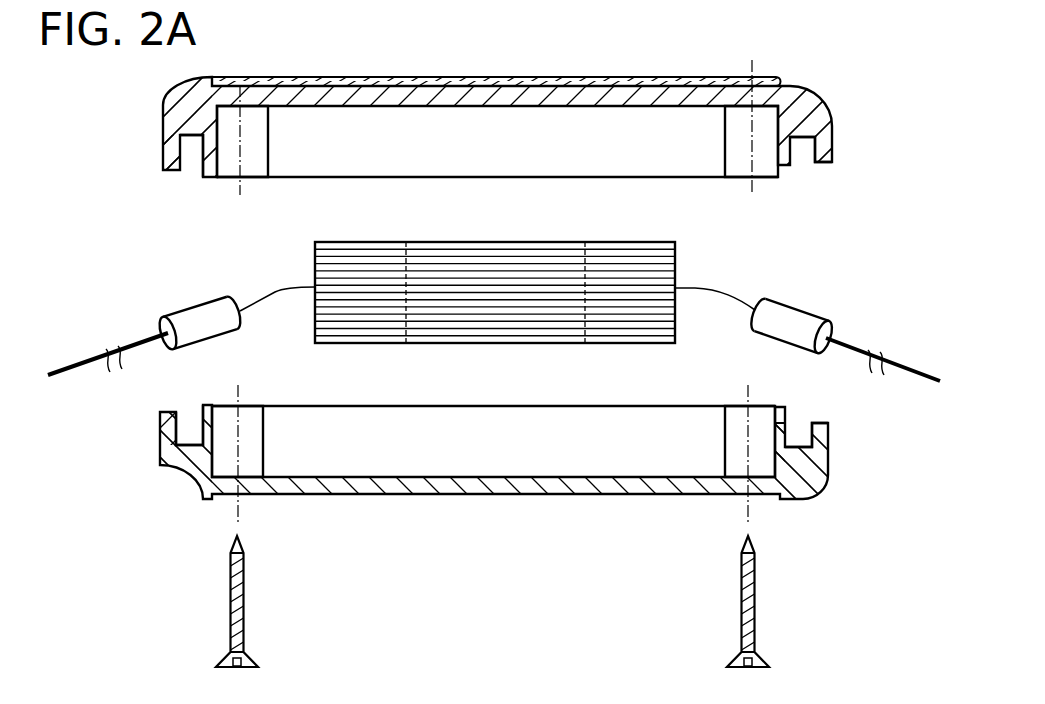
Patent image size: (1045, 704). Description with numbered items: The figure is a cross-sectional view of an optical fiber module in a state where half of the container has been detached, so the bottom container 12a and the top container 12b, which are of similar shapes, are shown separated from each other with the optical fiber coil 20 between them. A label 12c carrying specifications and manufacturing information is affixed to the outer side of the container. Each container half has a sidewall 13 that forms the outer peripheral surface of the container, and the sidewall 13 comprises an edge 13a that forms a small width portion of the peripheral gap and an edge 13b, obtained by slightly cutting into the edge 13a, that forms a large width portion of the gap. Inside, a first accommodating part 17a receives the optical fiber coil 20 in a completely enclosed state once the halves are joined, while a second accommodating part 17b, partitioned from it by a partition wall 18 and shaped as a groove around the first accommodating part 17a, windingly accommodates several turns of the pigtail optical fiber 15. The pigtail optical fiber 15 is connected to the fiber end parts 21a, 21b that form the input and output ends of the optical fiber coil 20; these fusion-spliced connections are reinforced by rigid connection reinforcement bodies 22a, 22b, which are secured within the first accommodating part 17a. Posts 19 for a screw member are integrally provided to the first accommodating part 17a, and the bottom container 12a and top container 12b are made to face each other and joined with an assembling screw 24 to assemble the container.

The bottom container 12a is at (512, 497).
The top container 12b is at (804, 86).
The label 12c is at (563, 77).
The sidewall 13 is at (163, 138).
The edge 13a is at (171, 173).
The edge 13b is at (822, 165).
The pigtail optical fiber 15 is at (82, 358).
The first accommodating part 17a is at (387, 167).
The second accommodating part 17b is at (190, 154).
The partition wall 18 is at (210, 172).
The post 19 is at (737, 140).
The optical fiber coil 20 is at (628, 242).
The fiber end part 21a is at (718, 290).
The fiber end part 21b is at (278, 288).
The connection reinforcement body 22a is at (790, 312).
The connection reinforcement body 22b is at (200, 312).
The assembling screw 24 is at (757, 604).